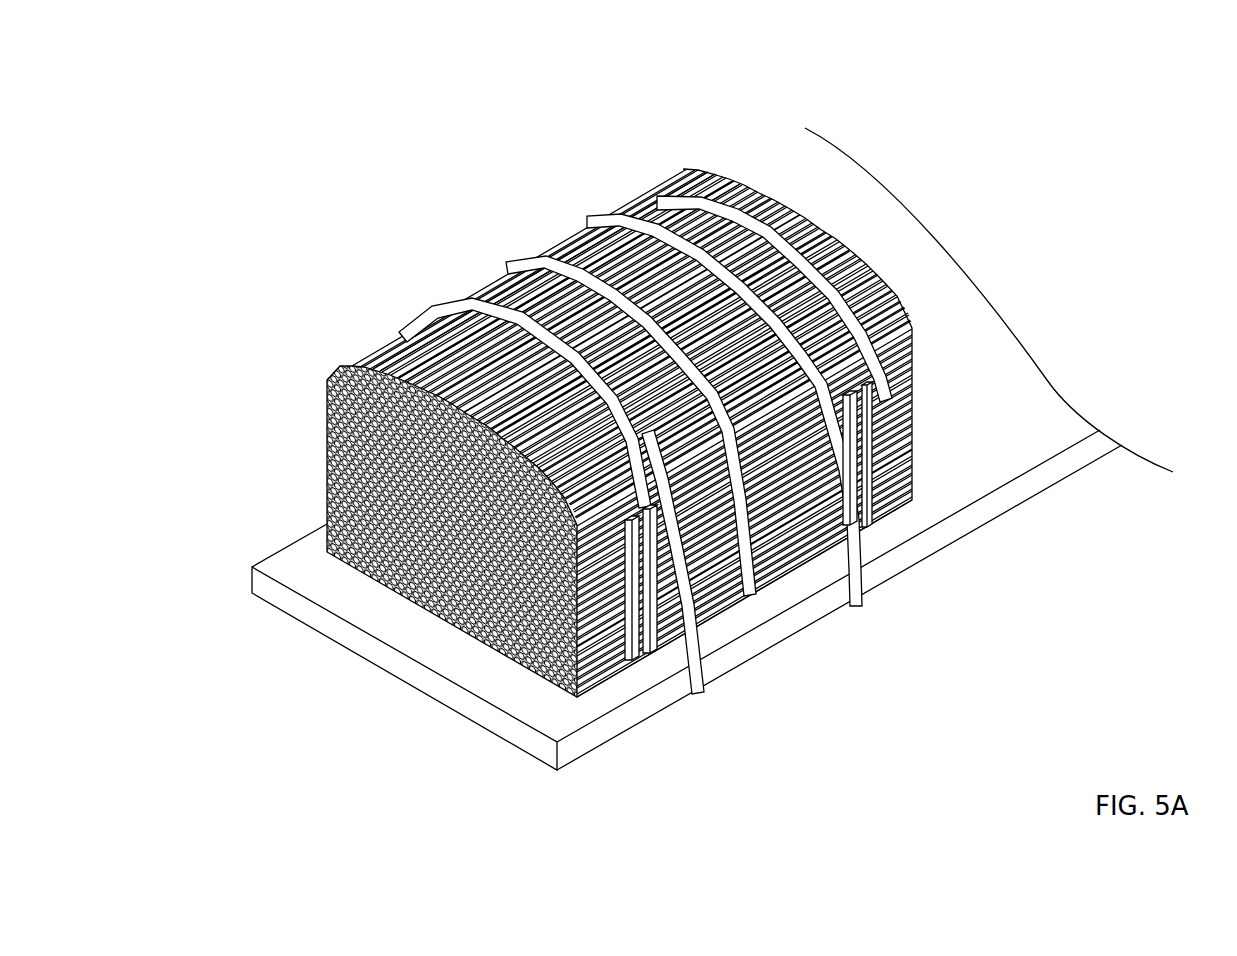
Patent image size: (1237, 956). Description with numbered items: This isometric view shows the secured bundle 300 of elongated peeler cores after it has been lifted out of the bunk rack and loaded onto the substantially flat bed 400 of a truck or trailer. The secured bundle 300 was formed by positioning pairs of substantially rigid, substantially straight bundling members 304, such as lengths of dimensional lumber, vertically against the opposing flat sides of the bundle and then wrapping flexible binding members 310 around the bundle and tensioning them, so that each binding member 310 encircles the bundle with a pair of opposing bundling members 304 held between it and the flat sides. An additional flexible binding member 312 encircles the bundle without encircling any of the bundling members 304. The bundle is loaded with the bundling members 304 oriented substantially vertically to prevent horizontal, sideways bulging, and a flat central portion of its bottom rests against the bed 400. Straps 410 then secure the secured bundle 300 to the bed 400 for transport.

The secured bundle 300 is at (613, 394).
The bundling members 304 is at (870, 478).
The flexible binding members 310 is at (443, 333).
The additional flexible binding members 312 is at (570, 273).
The bed 400 is at (315, 580).
The straps 410 is at (503, 320).